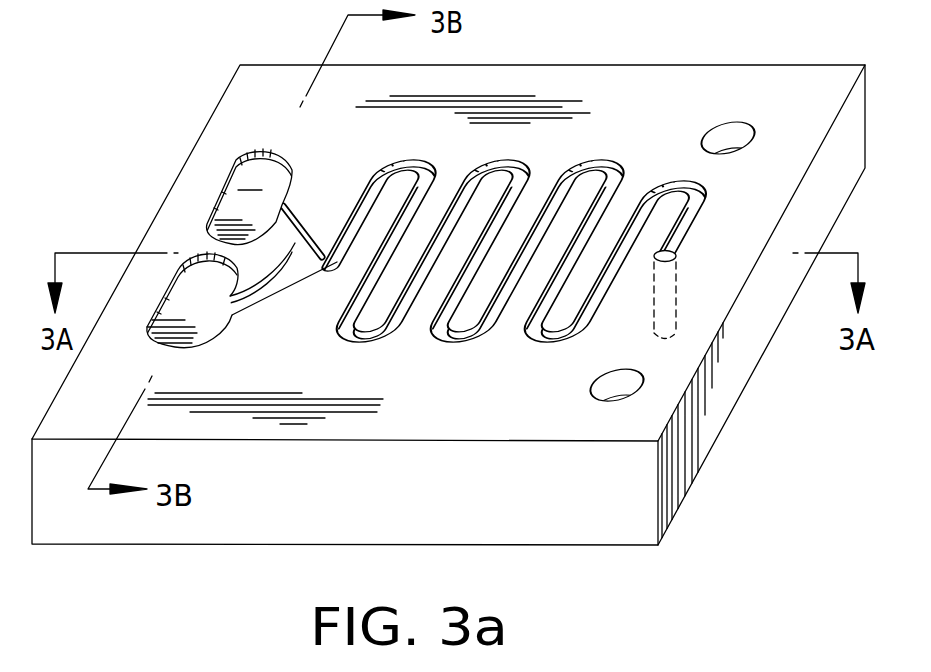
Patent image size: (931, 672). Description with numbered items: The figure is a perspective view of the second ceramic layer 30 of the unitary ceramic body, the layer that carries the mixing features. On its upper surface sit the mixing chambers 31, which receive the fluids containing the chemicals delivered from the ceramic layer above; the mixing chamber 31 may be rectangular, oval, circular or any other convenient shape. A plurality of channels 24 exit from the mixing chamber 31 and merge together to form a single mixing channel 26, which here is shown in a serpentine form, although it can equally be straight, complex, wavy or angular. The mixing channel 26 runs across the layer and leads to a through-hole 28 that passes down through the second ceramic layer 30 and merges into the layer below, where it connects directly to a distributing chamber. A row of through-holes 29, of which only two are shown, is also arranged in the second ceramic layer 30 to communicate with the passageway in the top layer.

The channels 24 is at (289, 214).
The mixing channel 26 is at (367, 341).
The through-hole 28 is at (674, 261).
The through-holes 29 is at (737, 136).
The second ceramic layer 30 is at (762, 439).
The mixing chamber 31 is at (262, 192).